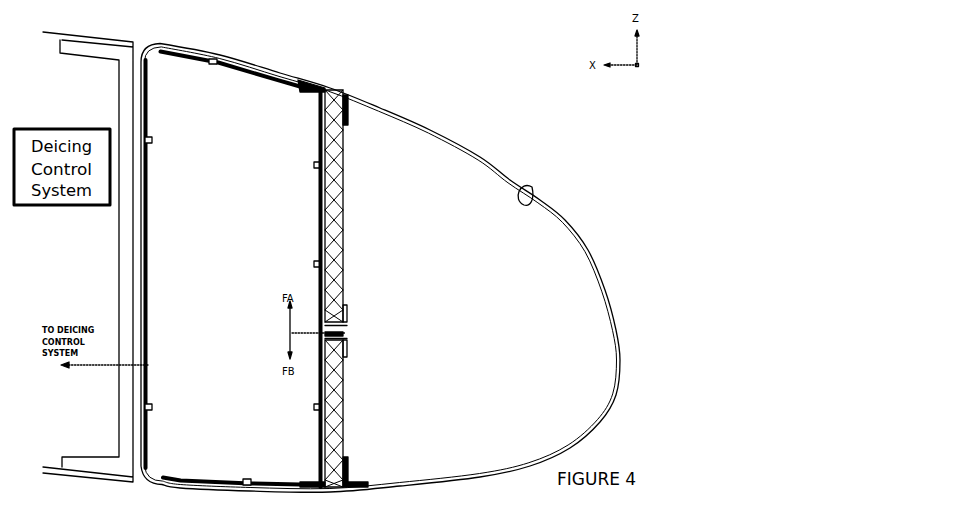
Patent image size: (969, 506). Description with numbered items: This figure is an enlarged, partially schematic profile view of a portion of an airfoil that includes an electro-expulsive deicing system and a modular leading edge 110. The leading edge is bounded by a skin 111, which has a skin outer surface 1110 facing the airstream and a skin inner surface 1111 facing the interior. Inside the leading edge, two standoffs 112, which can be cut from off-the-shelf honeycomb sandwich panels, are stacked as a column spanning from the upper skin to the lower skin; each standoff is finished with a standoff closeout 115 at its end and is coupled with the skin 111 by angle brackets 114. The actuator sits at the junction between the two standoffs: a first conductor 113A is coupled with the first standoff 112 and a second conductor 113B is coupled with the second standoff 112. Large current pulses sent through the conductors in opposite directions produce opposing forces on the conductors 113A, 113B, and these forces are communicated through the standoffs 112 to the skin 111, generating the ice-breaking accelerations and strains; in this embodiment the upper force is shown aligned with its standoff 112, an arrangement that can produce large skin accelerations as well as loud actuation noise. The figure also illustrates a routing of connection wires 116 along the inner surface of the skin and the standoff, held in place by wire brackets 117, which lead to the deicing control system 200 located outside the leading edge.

The deicing control system structure 200 is at (126, 33).
The modular leading edge 110 is at (525, 152).
The skin 111 is at (589, 250).
The skin outer surface 1110 is at (566, 219).
The skin inner surface 1111 is at (533, 184).
The standoff 112 is at (339, 184).
The conductor 113A is at (348, 326).
The conductor 113B is at (340, 337).
The angle brackets 114 is at (317, 90).
The standoff closeout 115 is at (348, 305).
The connection wires 116 is at (259, 73).
The wire brackets 117 is at (314, 165).